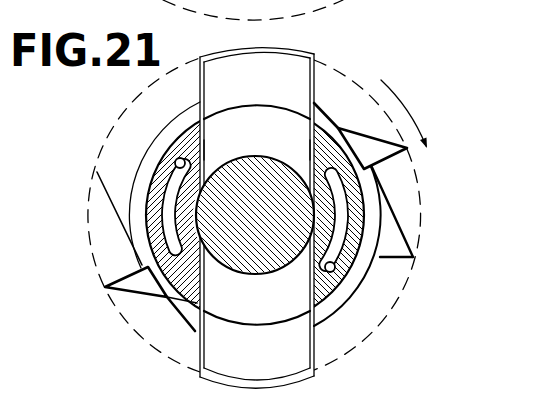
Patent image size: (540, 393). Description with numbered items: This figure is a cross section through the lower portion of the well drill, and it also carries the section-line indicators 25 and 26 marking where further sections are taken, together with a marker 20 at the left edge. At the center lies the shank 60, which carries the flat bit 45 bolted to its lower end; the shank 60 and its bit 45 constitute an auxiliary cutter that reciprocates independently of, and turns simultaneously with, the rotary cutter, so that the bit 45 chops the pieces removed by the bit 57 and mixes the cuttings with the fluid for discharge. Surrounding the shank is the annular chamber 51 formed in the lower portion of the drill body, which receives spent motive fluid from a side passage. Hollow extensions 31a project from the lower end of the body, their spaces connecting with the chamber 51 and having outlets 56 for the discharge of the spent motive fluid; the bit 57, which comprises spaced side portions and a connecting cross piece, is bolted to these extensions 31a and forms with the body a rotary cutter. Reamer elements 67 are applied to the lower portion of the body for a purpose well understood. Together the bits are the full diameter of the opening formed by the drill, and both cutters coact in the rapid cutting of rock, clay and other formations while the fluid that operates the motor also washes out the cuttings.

The section line indicator 20 is at (10, 107).
The section line 25- 25 is at (160, 172).
The section line 26- 26 is at (318, 388).
The extensions 31a is at (316, 150).
The flat bit 45 is at (265, 64).
The annular chamber 51 is at (140, 242).
The outlets 56 is at (176, 157).
The bit 57 is at (116, 176).
The shank 60 is at (266, 267).
The reamer elements 67 is at (382, 146).